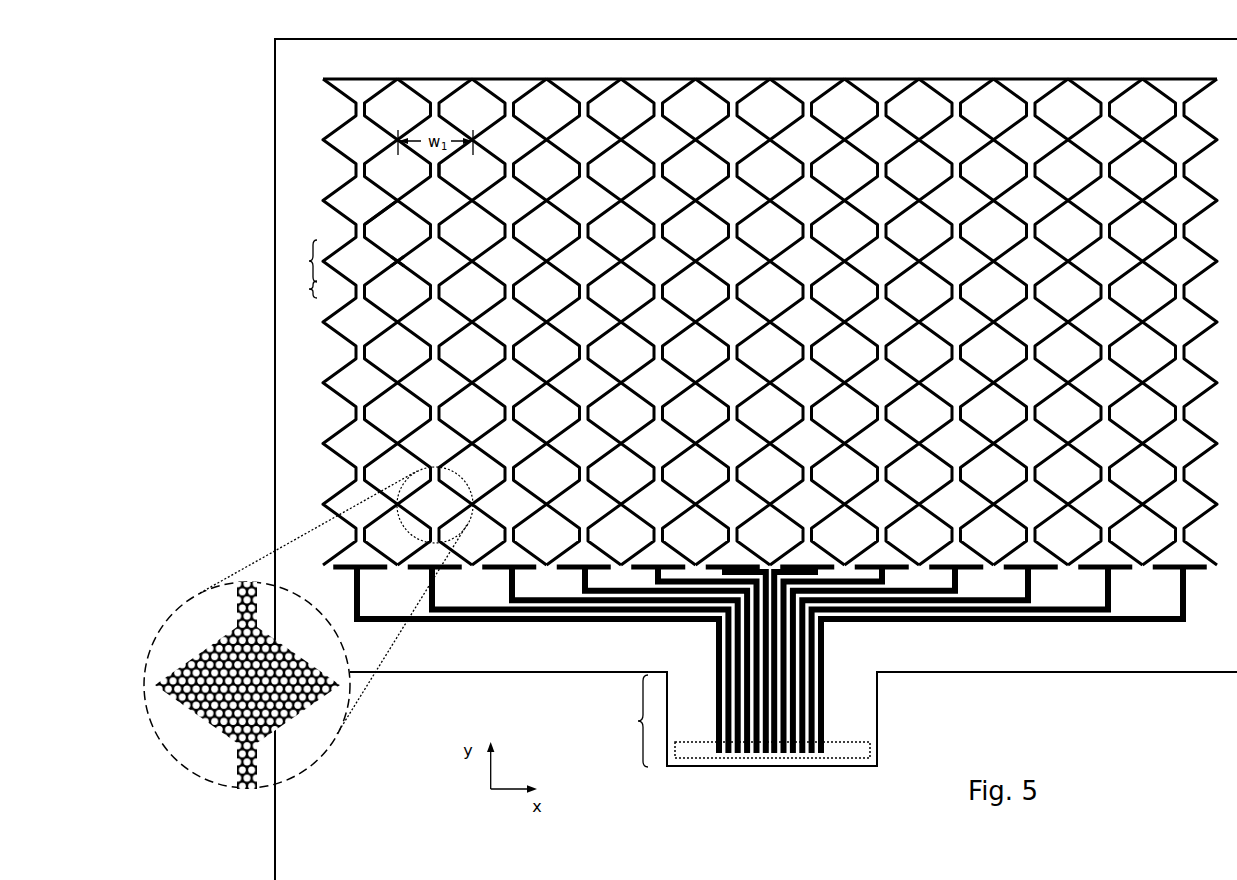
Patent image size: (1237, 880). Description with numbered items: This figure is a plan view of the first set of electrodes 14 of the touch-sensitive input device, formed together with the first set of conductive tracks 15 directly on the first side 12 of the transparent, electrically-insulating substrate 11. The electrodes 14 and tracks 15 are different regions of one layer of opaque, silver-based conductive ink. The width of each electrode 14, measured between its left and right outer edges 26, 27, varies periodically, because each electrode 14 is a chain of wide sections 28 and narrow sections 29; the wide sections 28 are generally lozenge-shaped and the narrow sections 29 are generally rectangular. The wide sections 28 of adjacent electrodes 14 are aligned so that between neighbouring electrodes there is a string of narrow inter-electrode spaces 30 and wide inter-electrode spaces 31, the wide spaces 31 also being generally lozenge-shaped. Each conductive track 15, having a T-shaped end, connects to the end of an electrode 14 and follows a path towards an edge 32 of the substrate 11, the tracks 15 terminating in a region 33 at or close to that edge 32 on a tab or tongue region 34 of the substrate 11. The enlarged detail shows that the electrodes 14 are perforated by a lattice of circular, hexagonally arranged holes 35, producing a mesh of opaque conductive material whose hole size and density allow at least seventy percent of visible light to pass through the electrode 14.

The substrate 11 is at (276, 359).
The first side 12 is at (302, 361).
The first set of electrodes 14 is at (356, 82).
The first set of conductive tracks 15 is at (353, 590).
The outer edge 26 is at (429, 173).
The outer edge 27 is at (440, 173).
The wide section 28 is at (299, 261).
The narrow section 29 is at (299, 291).
The narrow inter-electrode space 30 is at (376, 214).
The wide inter-electrode space 31 is at (397, 272).
The edge of the substrate 32 is at (771, 767).
The region 33 is at (813, 759).
The tab region 34 is at (793, 719).
The holes 35 is at (287, 730).